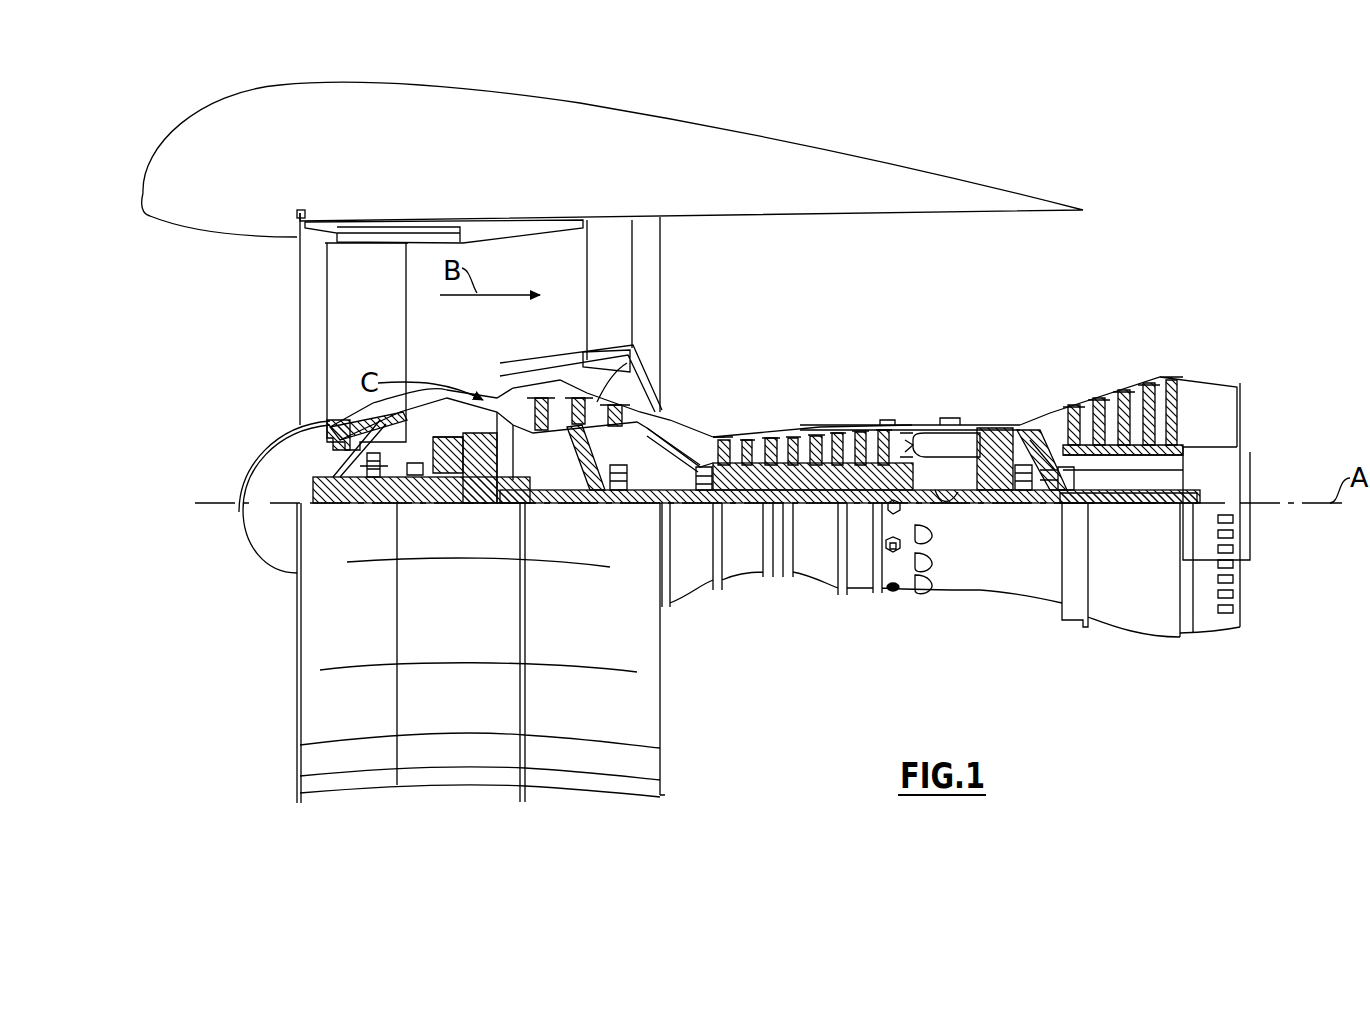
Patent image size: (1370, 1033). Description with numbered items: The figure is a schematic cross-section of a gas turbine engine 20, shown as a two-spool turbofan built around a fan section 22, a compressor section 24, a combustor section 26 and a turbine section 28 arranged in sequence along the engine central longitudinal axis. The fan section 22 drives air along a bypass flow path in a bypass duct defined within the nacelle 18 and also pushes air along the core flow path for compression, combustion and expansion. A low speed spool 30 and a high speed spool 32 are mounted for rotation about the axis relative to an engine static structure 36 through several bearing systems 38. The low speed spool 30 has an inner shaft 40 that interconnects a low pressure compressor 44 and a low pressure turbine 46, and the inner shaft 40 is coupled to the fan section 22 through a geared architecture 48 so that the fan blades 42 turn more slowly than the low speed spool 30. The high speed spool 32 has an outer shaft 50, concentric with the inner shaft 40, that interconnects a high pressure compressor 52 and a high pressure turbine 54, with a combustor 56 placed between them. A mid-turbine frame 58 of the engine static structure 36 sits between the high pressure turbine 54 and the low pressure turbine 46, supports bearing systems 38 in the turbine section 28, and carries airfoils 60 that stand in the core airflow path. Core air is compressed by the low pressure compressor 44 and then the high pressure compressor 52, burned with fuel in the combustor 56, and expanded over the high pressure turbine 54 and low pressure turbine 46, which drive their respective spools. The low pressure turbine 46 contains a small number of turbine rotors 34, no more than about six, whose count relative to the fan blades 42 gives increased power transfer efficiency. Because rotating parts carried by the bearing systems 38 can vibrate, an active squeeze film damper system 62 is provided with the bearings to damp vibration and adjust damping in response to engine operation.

The nacelle 18 is at (610, 132).
The gas turbine engine 20 is at (1132, 136).
The fan section 22 is at (507, 192).
The compressor section 24 is at (907, 338).
The combustor section 26 is at (982, 338).
The turbine section 28 is at (1187, 338).
The low speed spool 30 is at (818, 507).
The high speed spool 32 is at (853, 467).
The turbine rotors 34 is at (1147, 473).
The engine static structure 36 is at (858, 592).
The bearing systems 38 is at (358, 480).
The inner shaft 40 is at (680, 507).
The fan blades 42 is at (380, 348).
The low pressure compressor 44 is at (660, 362).
The low pressure turbine 46 is at (1127, 397).
The geared architecture 48 is at (487, 487).
The outer shaft 50 is at (942, 503).
The high pressure compressor 52 is at (790, 435).
The high pressure turbine 54 is at (1000, 430).
The combustor 56 is at (933, 445).
The mid-turbine frame 58 is at (1042, 410).
The airfoils 60 is at (1070, 503).
The active squeeze film damper system 62 is at (400, 482).